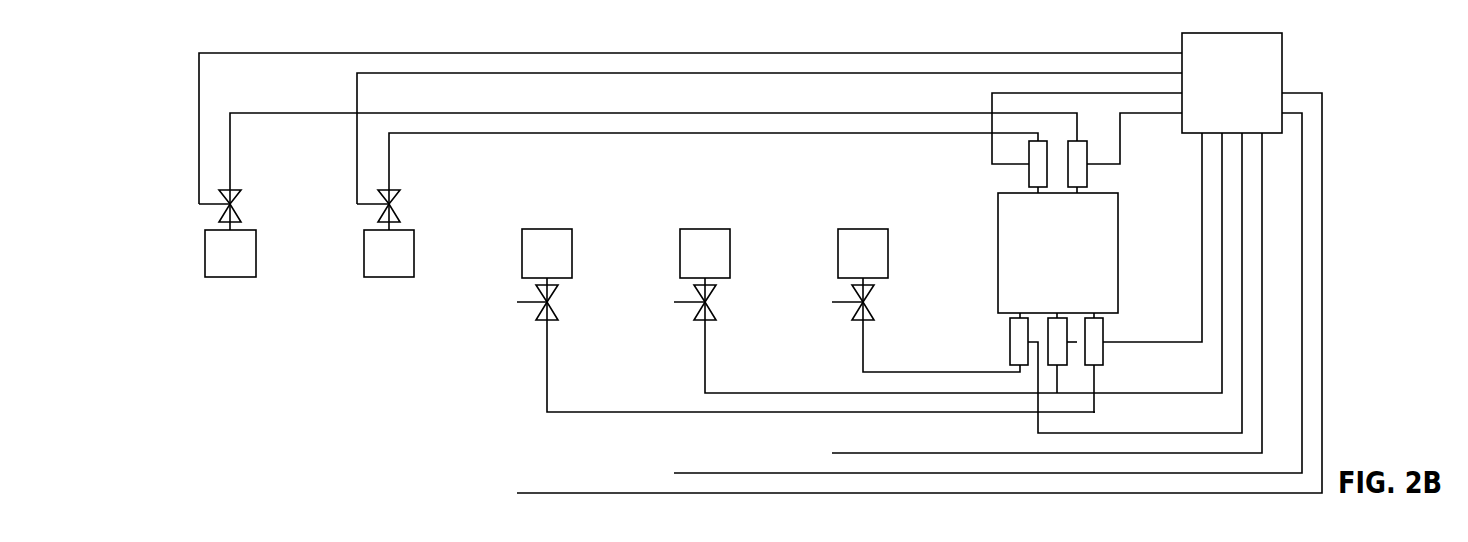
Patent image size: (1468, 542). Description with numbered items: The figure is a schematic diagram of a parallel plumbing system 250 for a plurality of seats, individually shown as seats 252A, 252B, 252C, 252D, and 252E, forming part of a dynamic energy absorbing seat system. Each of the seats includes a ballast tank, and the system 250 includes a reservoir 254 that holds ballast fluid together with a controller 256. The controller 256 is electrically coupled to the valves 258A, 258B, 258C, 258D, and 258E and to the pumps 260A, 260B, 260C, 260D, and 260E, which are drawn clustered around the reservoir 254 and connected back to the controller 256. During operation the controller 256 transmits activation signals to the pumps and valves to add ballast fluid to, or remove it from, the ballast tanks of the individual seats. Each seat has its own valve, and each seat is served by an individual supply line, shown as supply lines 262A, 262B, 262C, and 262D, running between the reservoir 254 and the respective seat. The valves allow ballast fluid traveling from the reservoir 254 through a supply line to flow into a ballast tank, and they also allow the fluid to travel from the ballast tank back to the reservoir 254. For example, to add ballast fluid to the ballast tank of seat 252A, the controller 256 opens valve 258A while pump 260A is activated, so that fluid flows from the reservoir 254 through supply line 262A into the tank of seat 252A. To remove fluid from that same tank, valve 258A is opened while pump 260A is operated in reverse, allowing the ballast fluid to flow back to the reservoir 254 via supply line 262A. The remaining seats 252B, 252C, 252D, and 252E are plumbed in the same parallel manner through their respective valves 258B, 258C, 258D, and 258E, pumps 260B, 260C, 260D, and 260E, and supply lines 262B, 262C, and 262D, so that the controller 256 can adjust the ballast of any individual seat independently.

The parallel plumbing system 250 is at (178, 55).
The seat 252A is at (218, 251).
The seat 252B is at (377, 251).
The seat 252C is at (533, 252).
The seat 252D is at (692, 252).
The seat 252E is at (848, 254).
The reservoir 254 is at (998, 253).
The controller 256 is at (1263, 60).
The valve 258A is at (232, 187).
The valve 258B is at (391, 187).
The valve 258C is at (548, 320).
The valve 258D is at (706, 320).
The valve 258E is at (867, 320).
The pump 260A is at (1088, 172).
The pump 260B is at (1028, 172).
The pump 260C is at (1105, 352).
The pump 260D is at (1060, 368).
The pump 260E is at (1012, 330).
The supply line 262A is at (248, 112).
The supply line 262B is at (533, 134).
The supply line 262C is at (620, 414).
The supply line 262D is at (795, 396).